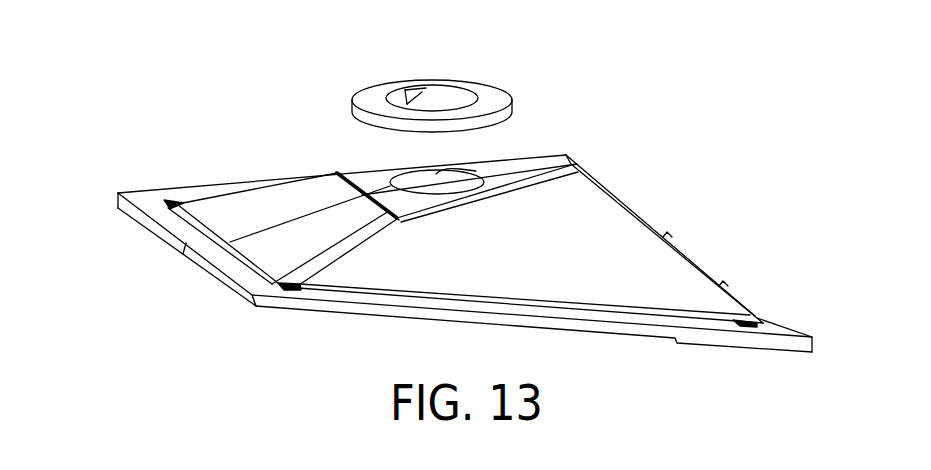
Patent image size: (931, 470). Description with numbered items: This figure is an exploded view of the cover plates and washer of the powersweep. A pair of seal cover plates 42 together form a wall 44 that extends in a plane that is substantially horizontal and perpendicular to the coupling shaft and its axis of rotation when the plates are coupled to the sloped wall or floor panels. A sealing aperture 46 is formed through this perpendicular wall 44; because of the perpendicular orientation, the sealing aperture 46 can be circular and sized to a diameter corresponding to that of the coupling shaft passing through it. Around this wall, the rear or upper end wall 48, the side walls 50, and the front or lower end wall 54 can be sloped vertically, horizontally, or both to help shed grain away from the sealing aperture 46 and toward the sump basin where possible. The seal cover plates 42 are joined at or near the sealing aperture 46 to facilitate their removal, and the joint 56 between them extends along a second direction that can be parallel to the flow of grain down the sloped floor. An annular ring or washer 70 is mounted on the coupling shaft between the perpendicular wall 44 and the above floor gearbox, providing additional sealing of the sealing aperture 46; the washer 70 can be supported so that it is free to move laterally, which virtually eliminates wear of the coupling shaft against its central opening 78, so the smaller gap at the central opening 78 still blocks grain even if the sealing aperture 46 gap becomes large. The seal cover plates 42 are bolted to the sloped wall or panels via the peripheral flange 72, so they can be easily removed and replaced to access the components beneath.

The seal cover plates 42 is at (110, 225).
The wall 44 is at (388, 204).
The sealing aperture 46 is at (470, 168).
The rear or upper end wall 48 is at (257, 210).
The side walls 50 is at (500, 272).
The front or lower end wall 54 is at (630, 203).
The joint 56 is at (315, 212).
The annular ring or washer 70 is at (480, 86).
The peripheral flange 72 is at (757, 307).
The central opening 78 is at (424, 92).